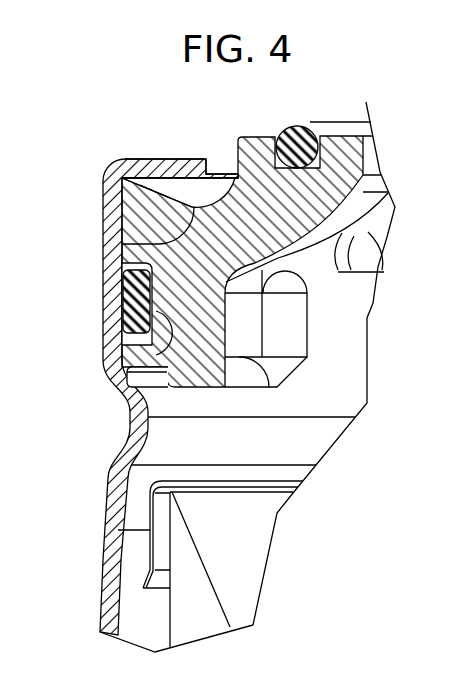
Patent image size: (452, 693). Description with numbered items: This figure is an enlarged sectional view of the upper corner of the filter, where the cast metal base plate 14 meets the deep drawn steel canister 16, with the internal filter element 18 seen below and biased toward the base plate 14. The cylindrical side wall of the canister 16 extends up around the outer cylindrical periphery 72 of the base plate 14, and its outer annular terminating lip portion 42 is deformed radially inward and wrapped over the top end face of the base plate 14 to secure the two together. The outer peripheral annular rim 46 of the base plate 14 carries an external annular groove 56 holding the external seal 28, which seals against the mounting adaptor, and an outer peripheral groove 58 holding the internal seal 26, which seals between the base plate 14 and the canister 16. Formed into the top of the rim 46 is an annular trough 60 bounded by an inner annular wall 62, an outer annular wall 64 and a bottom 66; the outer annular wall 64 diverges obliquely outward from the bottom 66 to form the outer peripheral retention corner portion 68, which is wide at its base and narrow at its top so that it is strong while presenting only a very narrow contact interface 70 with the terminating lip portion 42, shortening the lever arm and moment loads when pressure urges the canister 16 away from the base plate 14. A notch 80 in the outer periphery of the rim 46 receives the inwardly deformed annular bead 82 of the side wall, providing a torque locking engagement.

The base plate 14 is at (349, 217).
The canister 16 is at (94, 591).
The filter element 18 is at (256, 525).
The internal seal 26 is at (128, 294).
The external seal 28 is at (300, 130).
The terminating lip portion 42 is at (166, 167).
The outer peripheral annular rim 46 is at (224, 287).
The external annular groove 56 is at (365, 187).
The outer peripheral groove 58 is at (112, 356).
The annular trough 60 is at (200, 193).
The inner annular wall 62 is at (223, 159).
The outer annular wall 64 is at (152, 183).
The bottom 66 is at (123, 240).
The outer peripheral retention corner portion 68 is at (128, 181).
The contact interface 70 is at (125, 158).
The outer cylindrical periphery 72 is at (128, 212).
The notch 80 is at (146, 396).
The inwardly deformed annular bead 82 is at (126, 437).